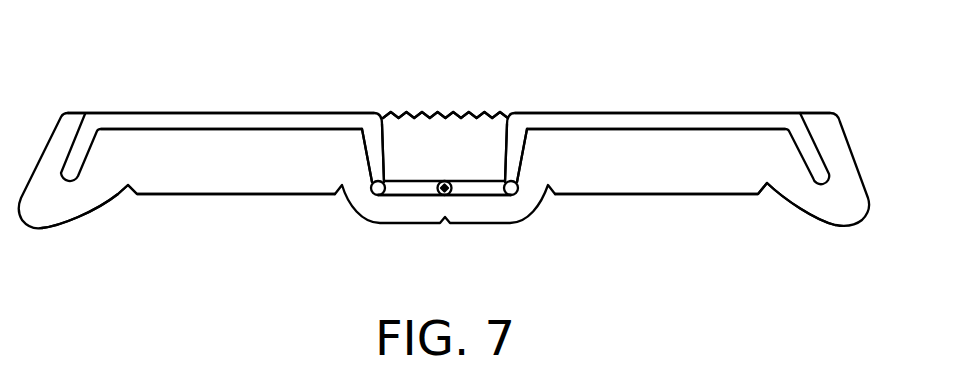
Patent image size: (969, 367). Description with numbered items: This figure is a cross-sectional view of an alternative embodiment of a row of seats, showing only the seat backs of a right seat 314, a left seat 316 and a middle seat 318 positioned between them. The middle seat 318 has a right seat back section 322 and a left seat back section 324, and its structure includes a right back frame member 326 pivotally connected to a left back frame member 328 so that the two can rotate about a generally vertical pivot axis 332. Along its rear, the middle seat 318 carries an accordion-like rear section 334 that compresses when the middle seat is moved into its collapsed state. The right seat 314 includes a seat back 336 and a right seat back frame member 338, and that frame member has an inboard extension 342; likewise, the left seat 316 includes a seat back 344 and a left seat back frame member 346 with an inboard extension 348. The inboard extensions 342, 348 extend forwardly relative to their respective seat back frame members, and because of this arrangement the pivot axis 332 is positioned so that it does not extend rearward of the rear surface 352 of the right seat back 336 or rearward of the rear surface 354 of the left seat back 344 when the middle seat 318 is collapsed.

The right seat 314 is at (226, 88).
The left seat 316 is at (658, 86).
The middle seat 318 is at (463, 80).
The right seat back section 322 is at (393, 225).
The left seat back section 324 is at (487, 190).
The right back frame member 326 is at (417, 192).
The left back frame member 328 is at (498, 198).
The pivot axis 332 is at (455, 193).
The accordion-like rear section 334 is at (432, 113).
The seat back 336 is at (193, 195).
The right seat back frame member 338 is at (178, 113).
The inboard extension 342 is at (362, 153).
The seat back 344 is at (680, 197).
The left seat back frame member 346 is at (698, 118).
The inboard extension 348 is at (527, 155).
The rear surface 352 is at (280, 113).
The rear surface 354 is at (588, 113).